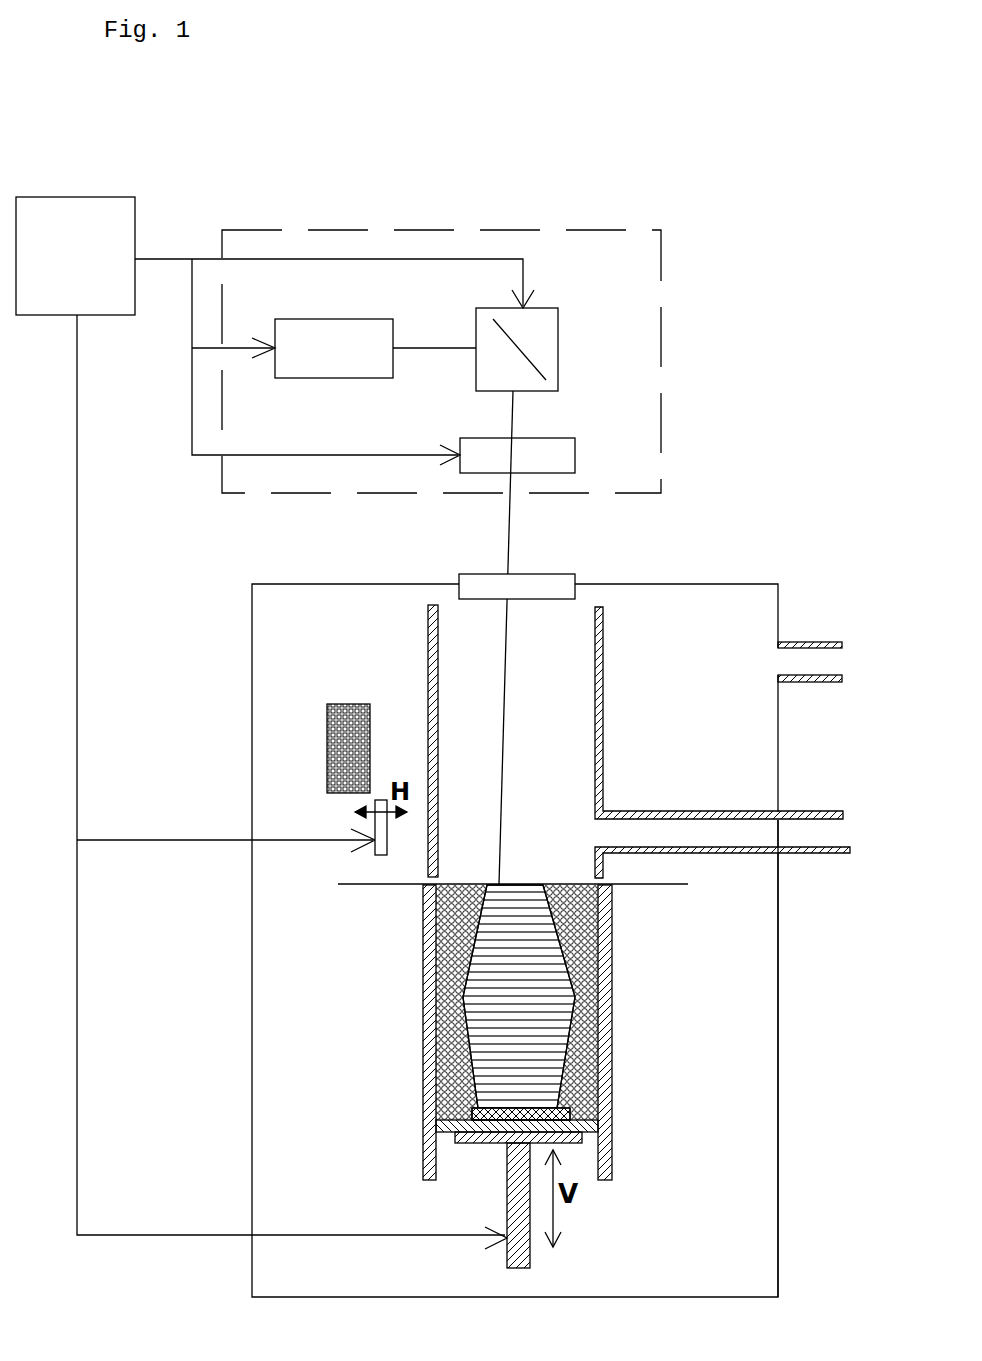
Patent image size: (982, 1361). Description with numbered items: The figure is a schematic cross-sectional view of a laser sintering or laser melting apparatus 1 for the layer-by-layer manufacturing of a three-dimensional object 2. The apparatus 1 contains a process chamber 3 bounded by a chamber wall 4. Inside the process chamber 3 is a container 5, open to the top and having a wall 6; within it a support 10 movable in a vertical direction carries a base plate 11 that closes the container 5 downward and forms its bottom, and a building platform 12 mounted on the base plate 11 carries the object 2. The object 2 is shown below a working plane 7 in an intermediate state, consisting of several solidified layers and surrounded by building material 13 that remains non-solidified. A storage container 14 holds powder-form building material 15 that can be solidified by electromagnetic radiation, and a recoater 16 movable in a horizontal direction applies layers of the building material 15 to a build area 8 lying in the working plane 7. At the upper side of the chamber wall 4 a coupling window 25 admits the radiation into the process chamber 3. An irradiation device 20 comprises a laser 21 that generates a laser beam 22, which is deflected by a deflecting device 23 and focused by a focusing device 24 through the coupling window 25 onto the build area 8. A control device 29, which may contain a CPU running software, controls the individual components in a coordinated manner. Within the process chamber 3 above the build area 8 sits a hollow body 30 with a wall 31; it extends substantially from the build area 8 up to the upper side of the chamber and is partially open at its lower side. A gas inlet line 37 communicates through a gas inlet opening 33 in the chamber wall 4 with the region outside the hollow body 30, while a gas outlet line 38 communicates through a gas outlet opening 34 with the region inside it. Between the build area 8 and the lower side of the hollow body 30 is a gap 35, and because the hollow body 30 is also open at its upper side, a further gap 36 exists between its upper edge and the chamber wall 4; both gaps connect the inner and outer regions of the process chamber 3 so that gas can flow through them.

The laser sintering or laser melting apparatus 1 is at (764, 168).
The object 2 is at (533, 940).
The process chamber 3 is at (748, 1080).
The chamber wall 4 is at (252, 1083).
The container 5 is at (612, 1092).
The wall 6 is at (602, 1033).
The working plane 7 is at (660, 888).
The build area 8 is at (570, 884).
The support 10 is at (497, 1138).
The base plate 11 is at (467, 1128).
The building platform 12 is at (440, 1118).
The building material 13 is at (447, 930).
The storage container 14 is at (347, 705).
The building material 15 is at (328, 753).
The recoater 16 is at (383, 857).
The irradiation device 20 is at (661, 350).
The laser 21 is at (332, 378).
The laser beam 22 is at (509, 552).
The deflecting device 23 is at (552, 318).
The focusing device 24 is at (545, 443).
The coupling window 25 is at (551, 588).
The control device 29 is at (75, 256).
The hollow body 30 is at (428, 678).
The wall 31 is at (433, 655).
The gas inlet opening 33 is at (773, 659).
The gas outlet opening 34 is at (598, 833).
The gap 35 is at (445, 878).
The gap 36 is at (437, 597).
The gas inlet line 37 is at (815, 685).
The gas outlet line 38 is at (823, 853).